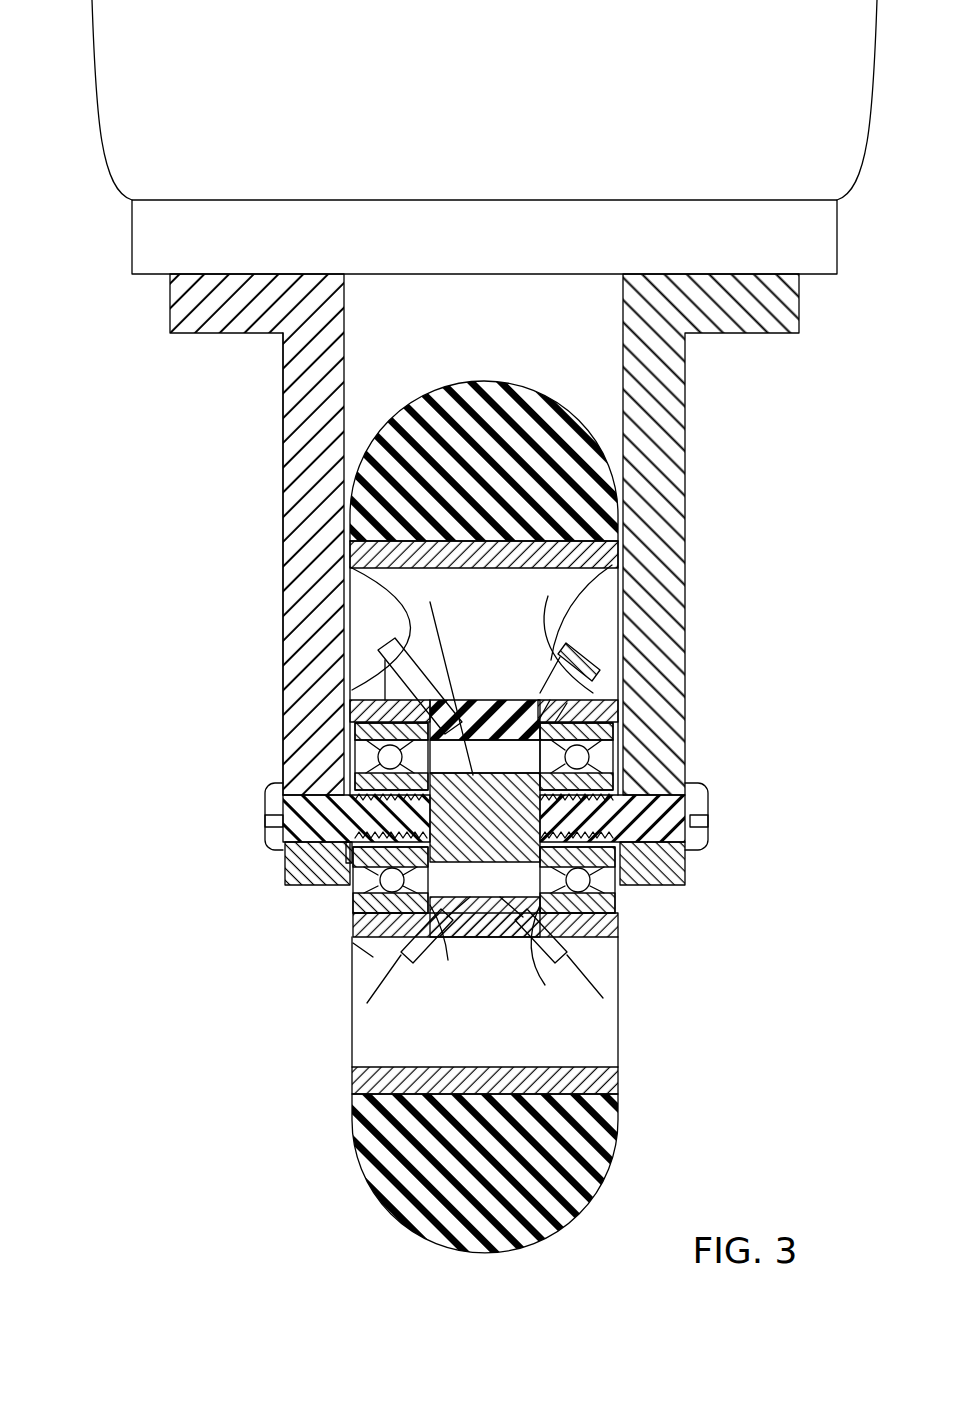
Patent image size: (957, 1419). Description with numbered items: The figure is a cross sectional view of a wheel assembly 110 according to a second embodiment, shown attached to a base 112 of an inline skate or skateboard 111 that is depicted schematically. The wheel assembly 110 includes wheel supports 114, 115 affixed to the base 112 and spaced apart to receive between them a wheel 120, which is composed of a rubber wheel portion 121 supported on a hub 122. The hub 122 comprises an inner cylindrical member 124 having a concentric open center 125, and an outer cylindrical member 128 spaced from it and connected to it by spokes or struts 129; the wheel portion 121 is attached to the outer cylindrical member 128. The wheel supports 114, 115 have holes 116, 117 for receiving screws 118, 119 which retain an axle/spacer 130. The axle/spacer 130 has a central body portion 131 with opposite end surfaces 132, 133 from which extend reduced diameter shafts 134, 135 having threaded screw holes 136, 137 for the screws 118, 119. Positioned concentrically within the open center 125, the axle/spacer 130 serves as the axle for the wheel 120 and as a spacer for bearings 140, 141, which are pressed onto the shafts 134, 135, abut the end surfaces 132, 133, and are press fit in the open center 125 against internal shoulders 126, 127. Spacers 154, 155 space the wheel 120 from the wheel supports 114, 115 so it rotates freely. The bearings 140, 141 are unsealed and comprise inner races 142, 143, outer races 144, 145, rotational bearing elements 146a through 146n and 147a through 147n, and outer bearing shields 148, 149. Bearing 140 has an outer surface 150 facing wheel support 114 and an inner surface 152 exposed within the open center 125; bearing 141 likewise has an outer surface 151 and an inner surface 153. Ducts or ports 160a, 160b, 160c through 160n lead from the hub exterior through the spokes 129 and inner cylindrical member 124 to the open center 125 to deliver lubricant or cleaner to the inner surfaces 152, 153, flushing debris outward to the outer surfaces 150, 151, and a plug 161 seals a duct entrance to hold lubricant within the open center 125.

The wheel assembly 110 is at (222, 478).
The inline skate or skateboard 111 is at (98, 154).
The base 112 is at (495, 245).
The wheel support 114 is at (686, 432).
The wheel support 115 is at (283, 438).
The hole 116 is at (685, 858).
The hole 117 is at (308, 880).
The screw 118 is at (700, 800).
The screw 119 is at (287, 807).
The wheel 120 is at (348, 1170).
The wheel portion 121 is at (507, 395).
The hub 122 is at (483, 778).
The inner cylindrical member 124 is at (467, 683).
The open center 125 is at (486, 769).
The internal shoulder 126 is at (593, 937).
The internal shoulder 127 is at (373, 957).
The outer cylindrical member 128 is at (612, 548).
The spokes or struts 129 is at (452, 603).
The axle/spacer 130 is at (490, 905).
The central body portion 131 is at (430, 602).
The end surface 132 is at (545, 985).
The end surface 133 is at (448, 960).
The reduced diameter shaft 134 is at (612, 793).
The reduced diameter shaft 135 is at (405, 742).
The threaded screw hole 136 is at (560, 705).
The threaded screw hole 137 is at (400, 790).
The bearing 140 is at (628, 913).
The bearing 141 is at (344, 912).
The inner race 142 is at (589, 760).
The inner race 143 is at (390, 724).
The outer race 144 is at (567, 703).
The outer race 145 is at (385, 666).
The rotational bearing element 146a is at (607, 715).
The rotational bearing element 146n is at (617, 937).
The rotational bearing element 147a is at (355, 688).
The rotational bearing element 147n is at (372, 910).
The outer bearing shield 148 is at (613, 880).
The outer bearing shield 149 is at (360, 882).
The outer surface 150 is at (597, 752).
The outer surface 151 is at (415, 752).
The inner surface 152 is at (550, 700).
The inner surface 153 is at (420, 605).
The spacer 154 is at (630, 870).
The spacer 155 is at (273, 815).
The duct or port 160a is at (560, 656).
The duct or port 160b is at (402, 678).
The duct or port 160c is at (367, 1003).
The duct or port 160n is at (603, 998).
The plug 161 is at (550, 640).